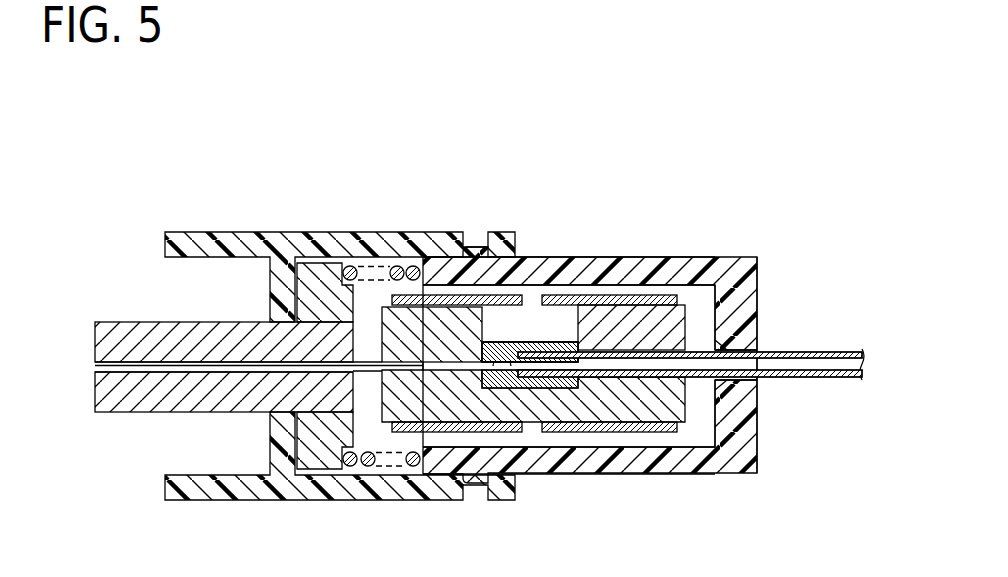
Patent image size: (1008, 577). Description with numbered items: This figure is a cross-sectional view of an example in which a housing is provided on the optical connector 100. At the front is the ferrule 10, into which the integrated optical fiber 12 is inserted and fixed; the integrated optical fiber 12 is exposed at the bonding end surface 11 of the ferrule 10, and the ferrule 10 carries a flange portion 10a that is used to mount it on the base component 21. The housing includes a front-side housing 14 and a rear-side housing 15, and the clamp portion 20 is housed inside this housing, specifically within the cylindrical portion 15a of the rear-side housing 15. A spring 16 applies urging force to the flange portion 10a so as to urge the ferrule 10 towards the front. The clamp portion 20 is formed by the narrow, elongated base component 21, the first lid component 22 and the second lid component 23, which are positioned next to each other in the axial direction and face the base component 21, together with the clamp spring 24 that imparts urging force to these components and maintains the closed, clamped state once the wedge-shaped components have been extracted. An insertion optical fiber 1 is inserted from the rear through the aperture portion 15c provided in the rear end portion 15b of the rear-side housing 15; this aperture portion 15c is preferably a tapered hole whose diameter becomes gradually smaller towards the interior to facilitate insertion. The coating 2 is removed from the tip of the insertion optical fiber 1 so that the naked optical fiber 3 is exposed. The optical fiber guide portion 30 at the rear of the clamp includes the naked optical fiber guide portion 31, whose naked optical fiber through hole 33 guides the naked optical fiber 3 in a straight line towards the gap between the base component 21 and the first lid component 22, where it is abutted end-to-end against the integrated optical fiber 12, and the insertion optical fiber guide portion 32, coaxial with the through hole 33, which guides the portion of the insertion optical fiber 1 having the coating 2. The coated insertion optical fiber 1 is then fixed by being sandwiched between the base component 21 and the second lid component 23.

The insertion optical fiber 1 is at (833, 391).
The coating 2 is at (830, 352).
The naked optical fiber 3 is at (440, 368).
The ferrule 10 is at (122, 321).
The flange portion 10a is at (320, 280).
The bonding end surface 11 is at (95, 392).
The integrated optical fiber 12 is at (321, 368).
The front-side housing 14 is at (360, 245).
The rear-side housing 15 is at (736, 250).
The cylindrical portion 15a is at (655, 257).
The rear end portion 15b is at (750, 292).
The aperture portion 15c is at (757, 380).
The spring 16 is at (413, 265).
The clamp portion 20 is at (543, 321).
The base component 21 is at (598, 410).
The first lid component 22 is at (453, 327).
The second lid component 23 is at (625, 320).
The clamp spring 24 is at (647, 432).
The optical fiber guide portion 30 is at (519, 321).
The naked optical fiber guide portion 31 is at (530, 340).
The insertion optical fiber guide portion 32 is at (560, 340).
The naked optical fiber through hole 33 is at (513, 378).
The optical connector 100 is at (118, 455).